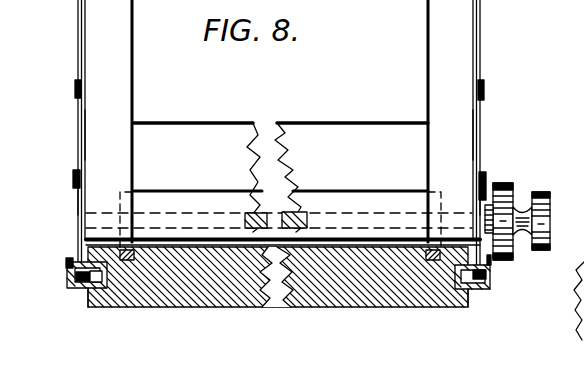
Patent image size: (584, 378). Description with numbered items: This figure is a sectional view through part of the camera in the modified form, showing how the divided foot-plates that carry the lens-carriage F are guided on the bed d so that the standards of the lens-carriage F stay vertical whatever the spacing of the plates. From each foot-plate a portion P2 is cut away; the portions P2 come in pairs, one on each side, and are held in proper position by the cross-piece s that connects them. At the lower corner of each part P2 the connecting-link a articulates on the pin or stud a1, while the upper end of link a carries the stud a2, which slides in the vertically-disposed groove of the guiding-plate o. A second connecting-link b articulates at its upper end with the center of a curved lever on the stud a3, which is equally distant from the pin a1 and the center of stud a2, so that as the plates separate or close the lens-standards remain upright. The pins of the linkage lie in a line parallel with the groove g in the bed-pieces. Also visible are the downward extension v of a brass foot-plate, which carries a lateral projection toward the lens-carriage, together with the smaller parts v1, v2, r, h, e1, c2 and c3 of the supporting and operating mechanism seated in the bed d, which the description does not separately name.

The guiding-plate o is at (78, 52).
The connecting-link a is at (78, 133).
The pin or stud a1 is at (66, 265).
The stud a2 is at (75, 92).
The stud a3 is at (73, 184).
The connecting-link b is at (78, 201).
The dashed guide h is at (120, 191).
The lens-carriage F is at (310, 177).
The spring plate e1 is at (276, 212).
The plate portion P2 is at (510, 285).
The bed d is at (360, 292).
The cross-piece s is at (267, 238).
The rib r is at (127, 258).
The downward extension v is at (71, 278).
The bracket insert v1 is at (82, 281).
The bracket foot v2 is at (107, 293).
The gear c2 is at (550, 222).
The pinion c3 is at (512, 252).
The groove g is at (577, 298).